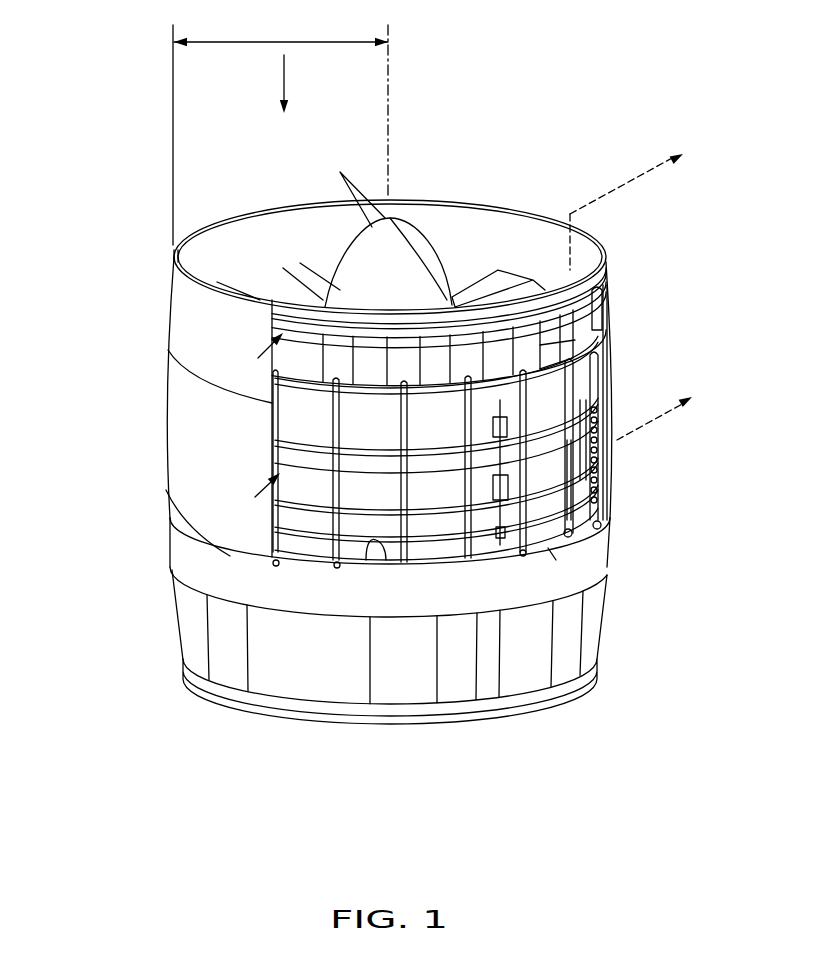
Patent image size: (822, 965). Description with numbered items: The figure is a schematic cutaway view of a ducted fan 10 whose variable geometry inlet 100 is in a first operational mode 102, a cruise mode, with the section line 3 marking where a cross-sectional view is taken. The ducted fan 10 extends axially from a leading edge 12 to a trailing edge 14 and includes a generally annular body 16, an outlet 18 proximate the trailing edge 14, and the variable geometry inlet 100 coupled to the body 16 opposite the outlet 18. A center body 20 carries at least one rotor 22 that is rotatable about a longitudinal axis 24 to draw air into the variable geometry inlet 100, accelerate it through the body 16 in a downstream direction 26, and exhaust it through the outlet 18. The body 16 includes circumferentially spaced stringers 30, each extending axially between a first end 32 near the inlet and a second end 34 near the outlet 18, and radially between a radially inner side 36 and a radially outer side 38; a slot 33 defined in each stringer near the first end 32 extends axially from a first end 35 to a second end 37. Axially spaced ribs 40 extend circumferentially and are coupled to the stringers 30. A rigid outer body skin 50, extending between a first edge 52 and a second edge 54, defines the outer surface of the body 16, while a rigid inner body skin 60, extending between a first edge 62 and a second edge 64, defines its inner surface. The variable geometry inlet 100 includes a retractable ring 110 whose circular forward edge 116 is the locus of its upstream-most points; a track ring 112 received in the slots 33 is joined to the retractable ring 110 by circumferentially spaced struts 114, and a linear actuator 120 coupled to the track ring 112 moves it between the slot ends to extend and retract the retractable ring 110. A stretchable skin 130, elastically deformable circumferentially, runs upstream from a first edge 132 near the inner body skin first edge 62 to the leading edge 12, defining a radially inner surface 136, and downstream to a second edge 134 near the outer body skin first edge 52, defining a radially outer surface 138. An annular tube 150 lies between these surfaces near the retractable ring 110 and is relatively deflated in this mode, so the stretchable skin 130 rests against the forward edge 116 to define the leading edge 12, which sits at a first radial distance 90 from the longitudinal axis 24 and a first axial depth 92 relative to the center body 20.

The section line 3- 3 is at (639, 283).
The ducted fan 10 is at (592, 108).
The leading edge 12 is at (221, 226).
The trailing edge 14 is at (227, 707).
The body 16 is at (166, 489).
The outlet 18 is at (177, 641).
The center body 20 is at (397, 240).
The rotor 22 is at (300, 270).
The longitudinal axis 24 is at (395, 78).
The downstream direction 26 is at (285, 70).
The stringers 30 is at (612, 480).
The first end 32 is at (630, 348).
The slot 33 is at (604, 380).
The second end 34 is at (631, 511).
The first end 35 is at (532, 548).
The radially inner side 36 is at (558, 548).
The second end 37 is at (548, 542).
The radially outer side 38 is at (587, 542).
The ribs 40 is at (327, 467).
The outer body skin 50 is at (183, 456).
The first edge 52 is at (185, 399).
The second edge 54 is at (262, 573).
The inner body skin 60 is at (261, 283).
The first edge 62 is at (236, 260).
The second edge 64 is at (380, 562).
The first radial distance 90 is at (263, 42).
The first axial depth 92 is at (339, 187).
The variable geometry inlet 100 is at (183, 236).
The first operational mode 102 is at (114, 110).
The retractable ring 110 is at (606, 268).
The track ring 112 is at (606, 408).
The struts 114 is at (590, 336).
The forward edge 116 is at (543, 285).
The actuator 120 is at (483, 545).
The stretchable skin 130 is at (232, 334).
The first edge 132 is at (501, 250).
The second edge 134 is at (167, 338).
The radially inner surface 136 is at (465, 230).
The radially outer surface 138 is at (187, 370).
The tube 150 is at (605, 296).